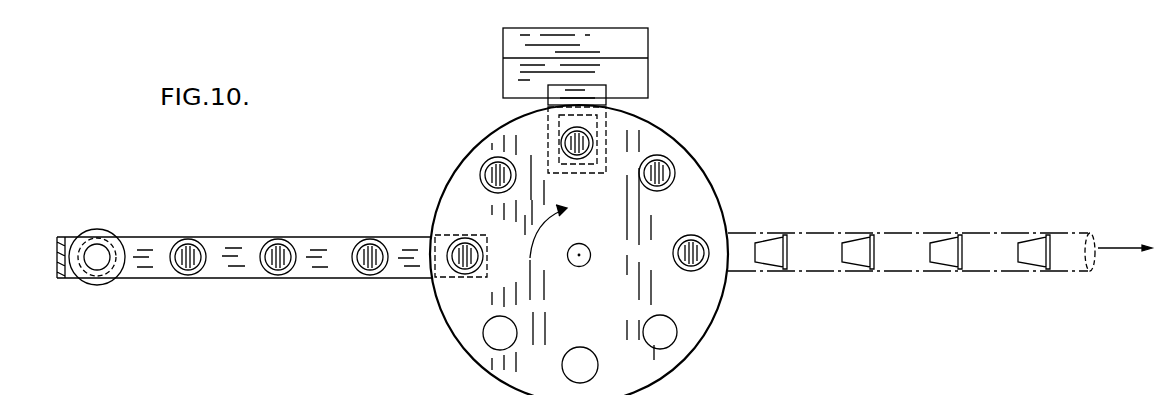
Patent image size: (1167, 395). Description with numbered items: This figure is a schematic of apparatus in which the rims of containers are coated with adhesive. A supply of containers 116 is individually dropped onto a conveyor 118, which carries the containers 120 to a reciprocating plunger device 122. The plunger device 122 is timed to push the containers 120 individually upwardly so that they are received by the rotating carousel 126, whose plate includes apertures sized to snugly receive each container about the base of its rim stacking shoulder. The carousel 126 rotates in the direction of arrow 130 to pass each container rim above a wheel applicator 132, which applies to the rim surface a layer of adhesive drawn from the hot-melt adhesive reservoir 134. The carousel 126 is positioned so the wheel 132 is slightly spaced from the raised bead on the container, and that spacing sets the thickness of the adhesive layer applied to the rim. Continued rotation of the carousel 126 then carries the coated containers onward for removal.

The supply of containers 116 is at (80, 235).
The conveyor 118 is at (252, 243).
The containers 120 is at (182, 242).
The reciprocating plunger device 122 is at (453, 253).
The rotating carousel 126 is at (707, 318).
The arrow indicating direction of carousel rotation 130 is at (530, 258).
The wheel applicator 132 is at (593, 128).
The hot-melt adhesive reservoir 134 is at (622, 57).